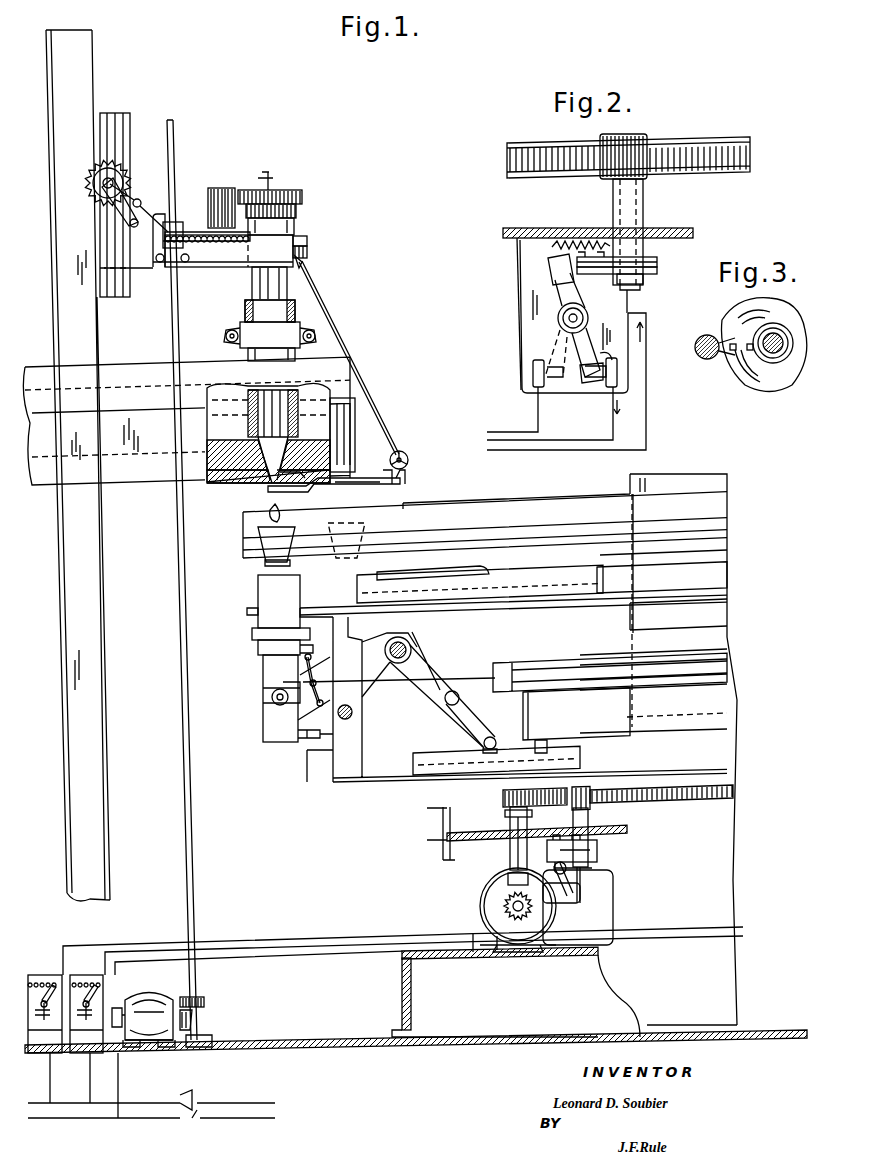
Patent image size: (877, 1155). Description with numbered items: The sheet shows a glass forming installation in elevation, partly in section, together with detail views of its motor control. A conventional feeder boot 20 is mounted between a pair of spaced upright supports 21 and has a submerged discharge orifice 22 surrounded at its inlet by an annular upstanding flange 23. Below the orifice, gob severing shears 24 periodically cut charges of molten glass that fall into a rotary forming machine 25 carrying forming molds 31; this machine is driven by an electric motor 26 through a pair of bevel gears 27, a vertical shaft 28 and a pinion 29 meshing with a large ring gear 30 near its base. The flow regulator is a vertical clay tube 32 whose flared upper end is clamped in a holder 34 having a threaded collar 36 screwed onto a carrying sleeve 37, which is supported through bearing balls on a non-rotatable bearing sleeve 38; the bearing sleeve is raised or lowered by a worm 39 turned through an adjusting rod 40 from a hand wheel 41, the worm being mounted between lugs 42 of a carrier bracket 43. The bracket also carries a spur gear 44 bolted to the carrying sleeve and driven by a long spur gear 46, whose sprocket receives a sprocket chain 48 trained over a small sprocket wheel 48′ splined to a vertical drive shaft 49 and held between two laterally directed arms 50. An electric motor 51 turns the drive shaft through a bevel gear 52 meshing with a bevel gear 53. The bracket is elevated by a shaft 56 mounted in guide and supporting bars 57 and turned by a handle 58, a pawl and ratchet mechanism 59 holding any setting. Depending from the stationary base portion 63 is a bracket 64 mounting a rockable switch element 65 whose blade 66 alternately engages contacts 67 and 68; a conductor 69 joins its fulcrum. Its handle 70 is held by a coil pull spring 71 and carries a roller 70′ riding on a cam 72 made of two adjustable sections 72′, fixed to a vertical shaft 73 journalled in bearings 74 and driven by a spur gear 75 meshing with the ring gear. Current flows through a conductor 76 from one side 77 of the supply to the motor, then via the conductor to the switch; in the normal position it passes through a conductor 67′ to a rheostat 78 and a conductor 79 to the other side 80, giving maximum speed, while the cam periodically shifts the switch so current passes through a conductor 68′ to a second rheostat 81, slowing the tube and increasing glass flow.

In FIG. 1, the feeder boot 20 is at (155, 472).
In FIG. 1, the upright supports 21 is at (100, 547).
In FIG. 1, the discharge orifice 22 is at (329, 452).
In FIG. 1, the annular upstanding flange 23 is at (253, 446).
In FIG. 1, the gob severing shears 24 is at (330, 491).
In FIG. 1, the forming machine 25 is at (735, 560).
In FIG. 1, the electric motor 26 is at (481, 897).
In FIG. 1, the bevel gears 27 is at (503, 909).
In FIG. 1, the vertical shaft 28 is at (512, 857).
In FIG. 1, the spur gear or pinion 29 is at (505, 801).
In FIG. 1, the ring gear 30 is at (735, 794).
In FIG. 2, the ring gear 30 is at (710, 136).
In FIG. 1, the forming molds 31 is at (258, 589).
In FIG. 1, the tube 32 is at (247, 405).
In FIG. 1, the holder 34 is at (270, 341).
In FIG. 1, the collar 36 is at (296, 305).
In FIG. 1, the carrying sleeve 37 is at (257, 292).
In FIG. 1, the bearing sleeve 38 is at (296, 228).
In FIG. 1, the worm 39 is at (308, 253).
In FIG. 1, the adjusting rod 40 is at (341, 336).
In FIG. 1, the hand wheel 41 is at (407, 457).
In FIG. 1, the lugs 42 is at (308, 240).
In FIG. 1, the carrier bracket 43 is at (228, 270).
In FIG. 1, the spur gear 44 is at (298, 191).
In FIG. 1, the long spur gear 46 is at (221, 188).
In FIG. 1, the sprocket chain 48 is at (201, 233).
In FIG. 1, the small sprocket wheel 48′ is at (157, 247).
In FIG. 1, the vertical drive shaft 49 is at (176, 320).
In FIG. 1, the laterally directed arms 50 is at (166, 226).
In FIG. 1, the electric motor 51 is at (152, 996).
In FIG. 1, the bevel gear 52 is at (193, 1021).
In FIG. 1, the bevel gear 53 is at (205, 1004).
In FIG. 1, the shaft 56 is at (101, 179).
In FIG. 1, the guide and supporting bars 57 is at (106, 115).
In FIG. 1, the crank or handle 58 is at (112, 208).
In FIG. 1, the pawl and ratchet mechanism 59 is at (92, 188).
In FIG. 1, the stationary base portion 63 is at (588, 836).
In FIG. 2, the stationary base portion 63 is at (524, 228).
In FIG. 1, the bracket 64 is at (581, 890).
In FIG. 2, the bracket 64 is at (527, 301).
In FIG. 1, the switch element 65 is at (507, 879).
In FIG. 2, the switch element 65 is at (559, 317).
In FIG. 2, the blade 66 is at (600, 392).
In FIG. 2, the contact 67 is at (548, 393).
In FIG. 1, the conductor 67′ is at (292, 939).
In FIG. 2, the conductor 67′ is at (518, 432).
In FIG. 2, the contact 68 is at (612, 356).
In FIG. 1, the conductor 68′ is at (338, 945).
In FIG. 2, the conductor 68′ is at (614, 433).
In FIG. 1, the conductor 69 is at (342, 955).
In FIG. 2, the conductor 69 is at (648, 330).
In FIG. 2, the handle 70 is at (552, 246).
In FIG. 2, the roller 70′ is at (549, 266).
In FIG. 3, the roller 70′ is at (720, 360).
In FIG. 2, the coil pull spring 71 is at (588, 228).
In FIG. 1, the cam 72 is at (600, 848).
In FIG. 2, the cam 72 is at (592, 276).
In FIG. 3, the cam 72 is at (790, 385).
In FIG. 3, the cam sections 72′ is at (770, 318).
In FIG. 2, the vertical shaft 73 is at (640, 286).
In FIG. 3, the vertical shaft 73 is at (793, 337).
In FIG. 2, the bearings 74 is at (644, 212).
In FIG. 2, the spur gear 75 is at (602, 177).
In FIG. 1, the conductor 76 is at (612, 786).
In FIG. 1, the side of main supply circuit 77 is at (134, 1118).
In FIG. 1, the rheostat 78 is at (45, 975).
In FIG. 1, the conductor 79 is at (51, 1084).
In FIG. 1, the side of main supply circuit 80 is at (68, 1103).
In FIG. 1, the second rheostat 81 is at (98, 975).